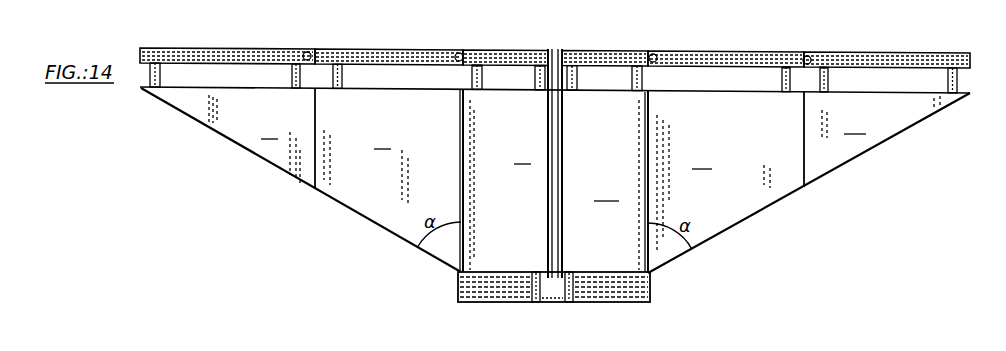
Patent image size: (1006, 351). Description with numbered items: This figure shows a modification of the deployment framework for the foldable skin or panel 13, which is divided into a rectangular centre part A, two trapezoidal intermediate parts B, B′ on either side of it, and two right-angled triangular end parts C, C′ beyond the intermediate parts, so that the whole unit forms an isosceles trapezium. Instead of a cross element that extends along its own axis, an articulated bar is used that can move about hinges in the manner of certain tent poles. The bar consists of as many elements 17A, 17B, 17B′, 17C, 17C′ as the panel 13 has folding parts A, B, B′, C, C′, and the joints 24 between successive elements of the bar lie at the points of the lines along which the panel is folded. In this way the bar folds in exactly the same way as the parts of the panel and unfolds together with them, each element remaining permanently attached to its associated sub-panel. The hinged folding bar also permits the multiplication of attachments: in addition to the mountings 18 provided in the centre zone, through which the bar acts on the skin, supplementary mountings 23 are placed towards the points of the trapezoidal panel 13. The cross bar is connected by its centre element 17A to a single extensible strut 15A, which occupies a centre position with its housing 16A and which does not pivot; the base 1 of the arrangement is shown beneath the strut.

The base member 1 is at (472, 286).
The skin 13 is at (619, 182).
The extensible strut 15A is at (552, 181).
The central channel in base 16A is at (558, 285).
The centre element of the cross bar 17A is at (578, 56).
The element of the cross bar 17B is at (343, 56).
The element of the cross bar 17B′ is at (752, 61).
The element of the cross bar 17C is at (181, 50).
The element of the cross bar 17C′ is at (931, 63).
The mountings 18 is at (538, 75).
The supplementary mountings 23 is at (821, 76).
The joints 24 is at (461, 52).
The centre part A is at (495, 181).
The intermediate part B is at (418, 180).
The end part C is at (288, 138).
The intermediate part B′ is at (680, 182).
The end part C′ is at (835, 139).